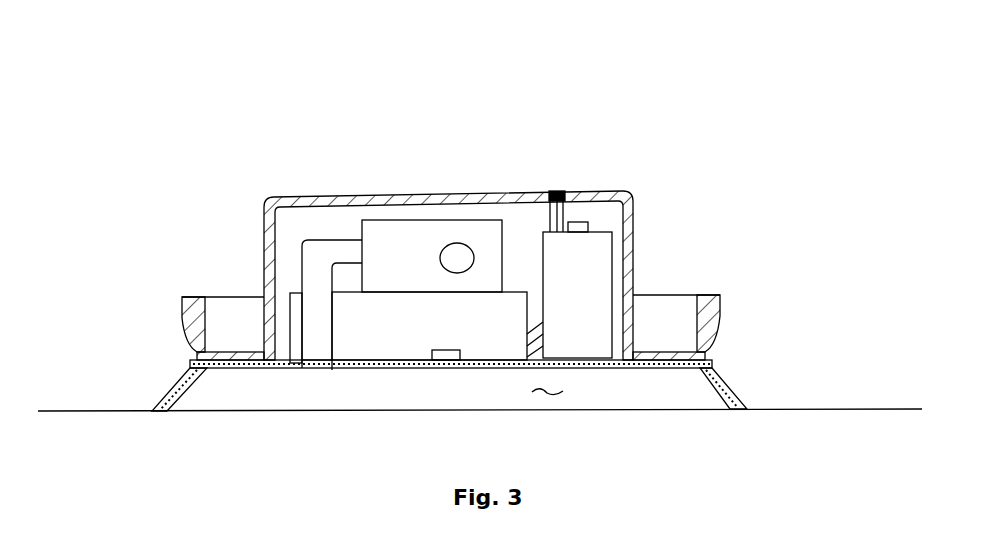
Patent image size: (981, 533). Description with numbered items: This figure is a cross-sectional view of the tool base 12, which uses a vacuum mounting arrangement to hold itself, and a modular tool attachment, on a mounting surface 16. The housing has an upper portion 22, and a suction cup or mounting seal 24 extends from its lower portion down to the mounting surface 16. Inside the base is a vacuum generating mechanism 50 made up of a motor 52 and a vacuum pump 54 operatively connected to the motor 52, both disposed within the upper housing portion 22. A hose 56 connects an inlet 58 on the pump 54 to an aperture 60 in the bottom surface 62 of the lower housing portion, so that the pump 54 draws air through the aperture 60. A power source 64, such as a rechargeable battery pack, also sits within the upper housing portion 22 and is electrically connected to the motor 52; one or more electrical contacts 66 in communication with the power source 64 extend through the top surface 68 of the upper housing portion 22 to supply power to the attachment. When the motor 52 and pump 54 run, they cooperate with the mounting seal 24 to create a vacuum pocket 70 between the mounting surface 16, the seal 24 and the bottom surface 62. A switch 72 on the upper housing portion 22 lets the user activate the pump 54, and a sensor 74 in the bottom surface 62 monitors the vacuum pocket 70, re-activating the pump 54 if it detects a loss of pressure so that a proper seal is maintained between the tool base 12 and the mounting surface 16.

The tool base 12 is at (480, 263).
The mounting surface 16 is at (805, 410).
The upper portion 22 is at (626, 184).
The mounting seal 24 is at (170, 381).
The vacuum generating mechanism 50 is at (516, 216).
The motor 52 is at (352, 352).
The vacuum pump 54 is at (388, 238).
The hose 56 is at (300, 240).
The inlet 58 is at (345, 262).
The aperture 60 is at (312, 365).
The bottom surface 62 is at (277, 367).
The power source 64 is at (600, 265).
The electrical contacts 66 is at (562, 198).
The top surface 68 is at (590, 190).
The vacuum pocket 70 is at (547, 397).
The switch 72 is at (452, 242).
The sensor 74 is at (438, 368).